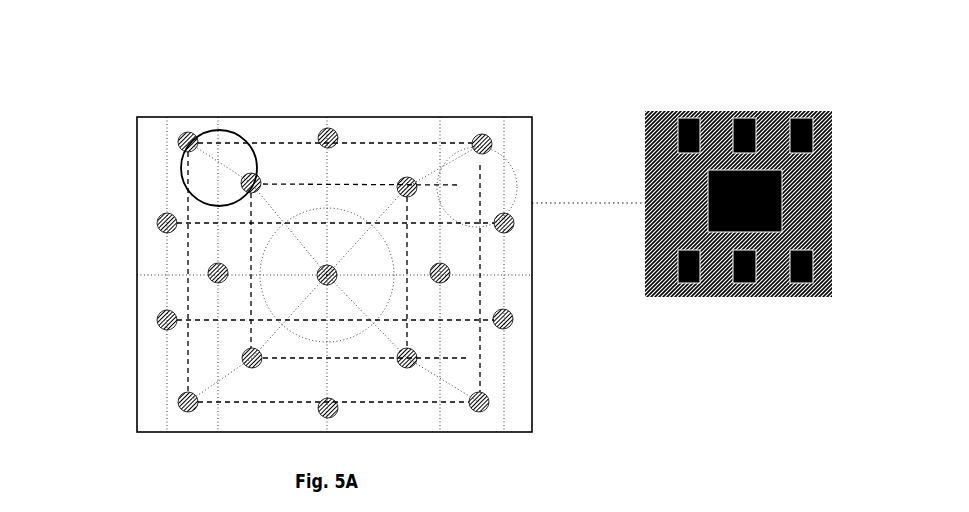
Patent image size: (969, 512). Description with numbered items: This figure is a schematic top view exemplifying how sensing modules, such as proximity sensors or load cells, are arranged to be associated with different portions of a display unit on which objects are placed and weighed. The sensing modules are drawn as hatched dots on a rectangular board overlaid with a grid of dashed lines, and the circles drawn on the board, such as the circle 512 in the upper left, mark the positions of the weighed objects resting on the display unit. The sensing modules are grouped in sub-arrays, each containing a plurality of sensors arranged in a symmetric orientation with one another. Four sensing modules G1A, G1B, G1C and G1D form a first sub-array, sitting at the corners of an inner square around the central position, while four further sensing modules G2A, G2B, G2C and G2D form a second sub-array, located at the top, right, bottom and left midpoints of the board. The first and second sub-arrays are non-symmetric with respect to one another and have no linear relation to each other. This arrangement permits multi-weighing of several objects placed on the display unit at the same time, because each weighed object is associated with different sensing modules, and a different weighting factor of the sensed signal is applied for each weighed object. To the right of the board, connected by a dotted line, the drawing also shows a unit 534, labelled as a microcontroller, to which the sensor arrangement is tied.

The selection region / sensing zone 512 is at (245, 127).
The microcontroller (uC) chip 534 is at (738, 232).
The sensing module G1A is at (257, 185).
The sensing module G2A is at (331, 135).
The sensing module G1B is at (412, 184).
The sensing module G2B is at (443, 278).
The sensing module G1C is at (410, 362).
The sensing module G2C is at (333, 410).
The sensing module G1D is at (249, 360).
The sensing module G2D is at (214, 277).